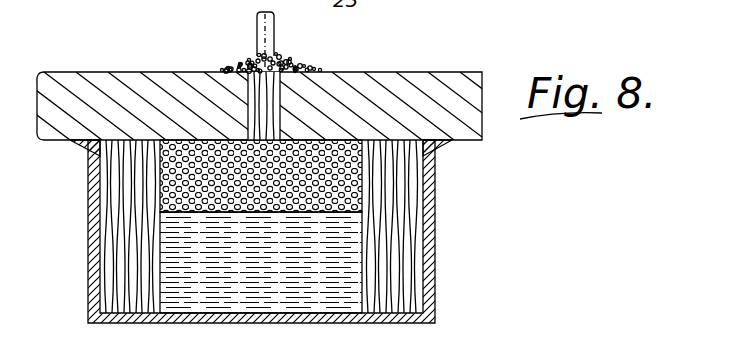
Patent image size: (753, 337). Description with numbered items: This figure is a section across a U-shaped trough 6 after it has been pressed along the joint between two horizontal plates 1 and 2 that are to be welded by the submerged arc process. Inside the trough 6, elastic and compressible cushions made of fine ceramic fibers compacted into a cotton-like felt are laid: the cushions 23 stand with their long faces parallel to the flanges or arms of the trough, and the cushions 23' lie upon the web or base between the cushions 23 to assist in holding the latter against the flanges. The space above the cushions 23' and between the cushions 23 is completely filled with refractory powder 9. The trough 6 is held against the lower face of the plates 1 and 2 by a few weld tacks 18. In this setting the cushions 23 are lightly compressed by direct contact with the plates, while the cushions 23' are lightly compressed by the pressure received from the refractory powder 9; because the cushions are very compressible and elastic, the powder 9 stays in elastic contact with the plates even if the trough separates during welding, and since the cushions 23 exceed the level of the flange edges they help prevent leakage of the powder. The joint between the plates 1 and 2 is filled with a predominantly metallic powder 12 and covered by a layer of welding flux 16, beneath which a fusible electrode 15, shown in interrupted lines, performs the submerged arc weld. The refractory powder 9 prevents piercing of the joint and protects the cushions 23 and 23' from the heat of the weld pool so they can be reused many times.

The horizontal plate 1 is at (97, 90).
The horizontal plate 2 is at (424, 80).
The U-shaped trough 6 is at (424, 216).
The refractory powder 9 is at (162, 186).
The predominantly metallic powder 12 is at (247, 107).
The fusible electrode 15 is at (284, 50).
The layer of welding flux 16 is at (243, 57).
The weld tack 18 is at (84, 147).
The cushion 23 is at (255, 226).
The cushion 23' is at (321, 262).